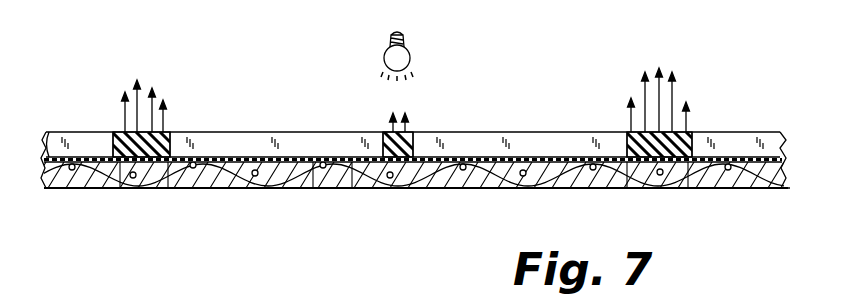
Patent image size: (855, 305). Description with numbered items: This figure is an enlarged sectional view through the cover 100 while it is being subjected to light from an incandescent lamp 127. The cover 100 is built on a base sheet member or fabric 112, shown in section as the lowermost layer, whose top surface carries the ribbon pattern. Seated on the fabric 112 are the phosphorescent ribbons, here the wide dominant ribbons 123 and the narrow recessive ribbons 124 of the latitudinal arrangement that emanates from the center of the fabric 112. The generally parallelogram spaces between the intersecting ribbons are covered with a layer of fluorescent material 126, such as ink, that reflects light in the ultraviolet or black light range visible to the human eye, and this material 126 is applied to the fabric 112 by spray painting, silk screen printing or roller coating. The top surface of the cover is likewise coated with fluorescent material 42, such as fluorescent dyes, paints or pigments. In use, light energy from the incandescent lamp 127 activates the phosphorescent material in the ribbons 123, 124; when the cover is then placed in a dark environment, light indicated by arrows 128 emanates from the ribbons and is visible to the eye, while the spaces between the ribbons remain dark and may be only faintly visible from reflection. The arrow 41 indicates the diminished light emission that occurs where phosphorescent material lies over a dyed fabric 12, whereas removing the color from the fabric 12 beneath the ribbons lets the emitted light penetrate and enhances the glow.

The cover 100 is at (411, 138).
The fabric 12 is at (398, 197).
The fabric 112 is at (196, 170).
The fluorescent material 42 is at (45, 133).
The fluorescent material 126 is at (262, 157).
The dominant ribbons 123 is at (143, 132).
The arrows 128 is at (165, 110).
The arrows 41 is at (629, 114).
The recessive ribbons 124 is at (422, 108).
The incandescent lamp 127 is at (393, 55).